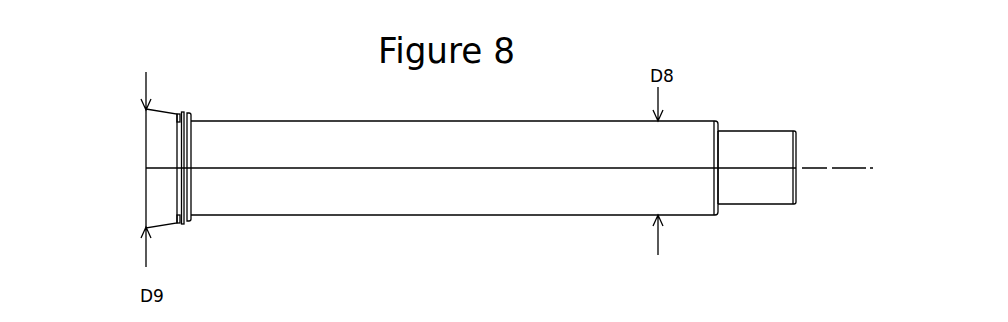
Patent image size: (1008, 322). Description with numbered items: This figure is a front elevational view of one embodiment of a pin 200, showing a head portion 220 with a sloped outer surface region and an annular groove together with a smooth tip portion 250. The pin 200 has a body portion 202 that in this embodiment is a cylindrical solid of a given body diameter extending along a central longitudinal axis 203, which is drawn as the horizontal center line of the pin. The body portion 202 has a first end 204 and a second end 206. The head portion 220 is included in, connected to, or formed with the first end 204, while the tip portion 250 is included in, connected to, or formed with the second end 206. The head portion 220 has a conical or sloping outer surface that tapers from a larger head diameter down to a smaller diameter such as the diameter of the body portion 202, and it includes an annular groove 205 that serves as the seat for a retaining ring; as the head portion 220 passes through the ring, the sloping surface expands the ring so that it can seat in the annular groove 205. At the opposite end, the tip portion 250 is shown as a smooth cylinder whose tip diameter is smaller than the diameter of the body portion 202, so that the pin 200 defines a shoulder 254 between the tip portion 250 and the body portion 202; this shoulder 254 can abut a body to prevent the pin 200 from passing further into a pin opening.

The pin 200 is at (108, 95).
The body portion 202 is at (460, 196).
The central longitudinal axis 203 is at (840, 168).
The first end 204 is at (204, 200).
The annular groove 205 is at (178, 227).
The second end 206 is at (697, 192).
The head portion 220 is at (162, 123).
The tip portion 250 is at (765, 145).
The shoulder 254 is at (722, 127).